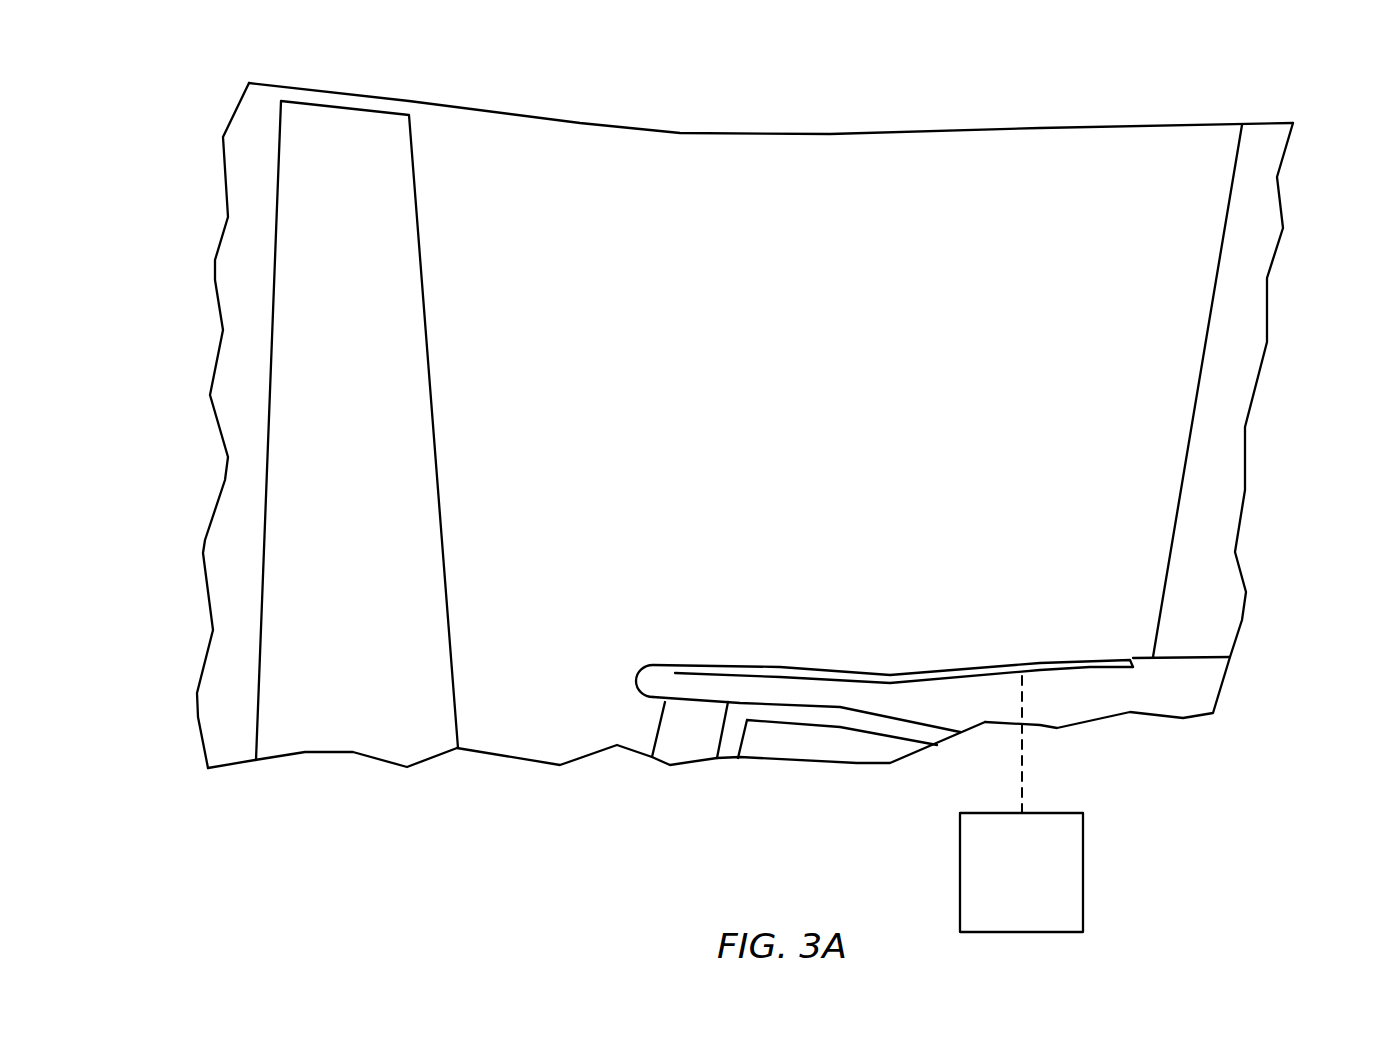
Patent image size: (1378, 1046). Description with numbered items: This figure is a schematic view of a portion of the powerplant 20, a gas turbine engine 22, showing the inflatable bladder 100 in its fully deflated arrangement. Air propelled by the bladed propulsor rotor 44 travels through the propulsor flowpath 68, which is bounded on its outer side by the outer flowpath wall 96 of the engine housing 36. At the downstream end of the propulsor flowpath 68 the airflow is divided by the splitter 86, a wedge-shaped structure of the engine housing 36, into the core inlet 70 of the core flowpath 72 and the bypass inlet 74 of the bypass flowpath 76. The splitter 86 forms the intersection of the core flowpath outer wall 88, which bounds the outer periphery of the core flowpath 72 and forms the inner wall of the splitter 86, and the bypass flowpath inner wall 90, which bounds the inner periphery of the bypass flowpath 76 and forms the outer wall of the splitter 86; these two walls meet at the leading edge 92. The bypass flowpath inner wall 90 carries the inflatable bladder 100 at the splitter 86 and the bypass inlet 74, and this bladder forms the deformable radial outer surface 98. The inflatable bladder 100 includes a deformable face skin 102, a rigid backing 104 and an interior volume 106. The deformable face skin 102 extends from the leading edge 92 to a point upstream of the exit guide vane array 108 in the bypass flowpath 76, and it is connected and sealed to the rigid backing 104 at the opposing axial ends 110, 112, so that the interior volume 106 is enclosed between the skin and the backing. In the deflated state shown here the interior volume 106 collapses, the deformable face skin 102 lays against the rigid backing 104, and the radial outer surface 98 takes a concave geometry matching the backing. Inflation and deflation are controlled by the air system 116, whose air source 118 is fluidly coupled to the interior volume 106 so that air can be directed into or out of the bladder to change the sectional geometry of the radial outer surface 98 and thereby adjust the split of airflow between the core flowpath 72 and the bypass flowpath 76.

The powerplant 20 is at (717, 485).
The gas turbine engine 22 is at (200, 90).
The engine housing 36 is at (1273, 105).
The propulsor rotor 44 is at (288, 768).
The propulsor flowpath 68 is at (484, 475).
The core inlet 70 is at (603, 725).
The core flowpath 72 is at (813, 742).
The bypass inlet 74 is at (625, 413).
The bypass flowpath 76 is at (946, 411).
The splitter 86 is at (859, 650).
The core flowpath outer wall 88 is at (768, 703).
The bypass flowpath inner wall 90 is at (871, 618).
The leading edge 92 is at (635, 680).
The outer flowpath wall 96 is at (682, 132).
The radial outer surface 98 is at (855, 670).
The inflatable bladder 100 is at (928, 668).
The deformable face skin 102 is at (1065, 662).
The rigid backing 104 is at (1067, 672).
The interior volume 106 is at (1093, 663).
The exit guide vane array 108 is at (1182, 377).
The axial end 110 is at (680, 668).
The axial end 112 is at (1130, 657).
The air system 116 is at (1105, 837).
The air source 118 is at (999, 884).